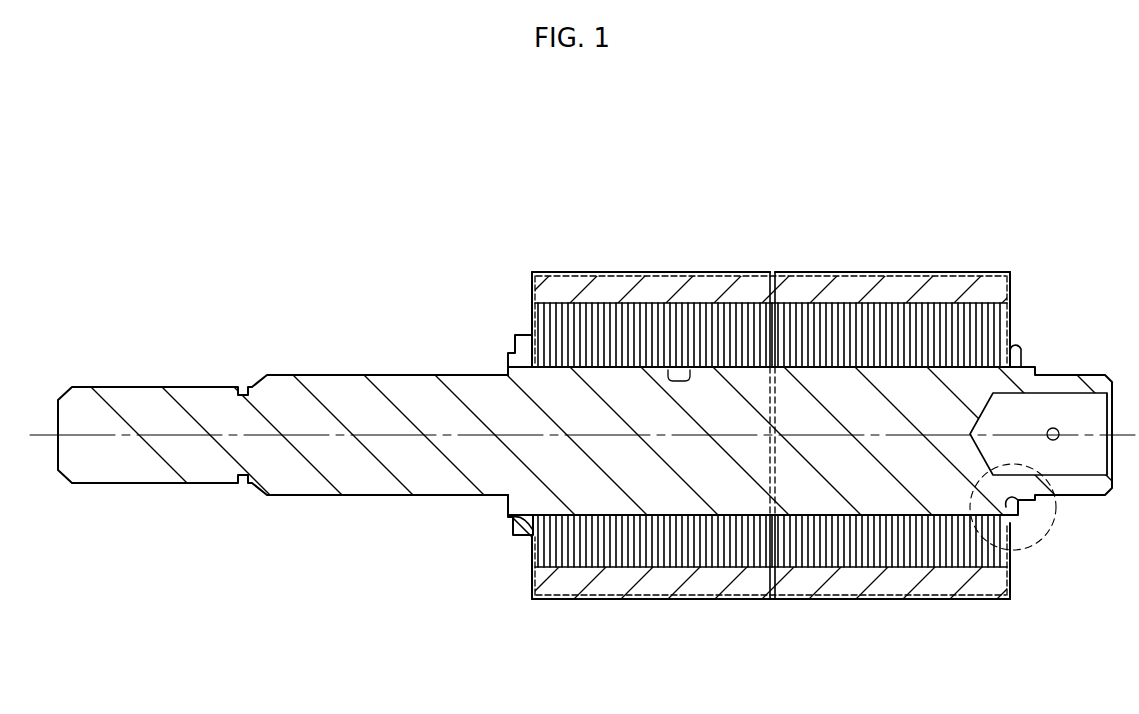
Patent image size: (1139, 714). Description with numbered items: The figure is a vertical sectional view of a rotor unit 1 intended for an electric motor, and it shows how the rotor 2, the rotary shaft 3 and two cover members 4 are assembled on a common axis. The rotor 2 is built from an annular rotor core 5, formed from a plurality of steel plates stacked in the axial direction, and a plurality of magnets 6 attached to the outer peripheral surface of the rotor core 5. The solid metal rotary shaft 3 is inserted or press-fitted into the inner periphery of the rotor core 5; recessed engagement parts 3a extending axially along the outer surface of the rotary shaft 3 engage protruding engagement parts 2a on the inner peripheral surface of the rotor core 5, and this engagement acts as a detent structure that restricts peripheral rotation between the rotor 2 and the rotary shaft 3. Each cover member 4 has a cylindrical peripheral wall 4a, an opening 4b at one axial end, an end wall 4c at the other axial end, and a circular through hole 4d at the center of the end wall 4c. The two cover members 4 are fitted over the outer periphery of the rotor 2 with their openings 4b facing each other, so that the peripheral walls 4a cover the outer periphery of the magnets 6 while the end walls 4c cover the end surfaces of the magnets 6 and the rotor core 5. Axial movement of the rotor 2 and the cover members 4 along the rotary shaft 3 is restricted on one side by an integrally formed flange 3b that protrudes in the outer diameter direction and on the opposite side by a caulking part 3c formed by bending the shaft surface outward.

The rotor unit 1 is at (1048, 239).
The rotor 2 is at (532, 313).
The protruding engagement parts 2a is at (668, 370).
The rotary shaft 3 is at (330, 375).
The recessed engagement parts 3a is at (622, 363).
The flange 3b is at (530, 537).
The caulking part 3c is at (1021, 551).
The cover member 4 is at (855, 273).
The peripheral wall 4a is at (946, 271).
The opening 4b is at (768, 330).
The end wall 4c is at (1013, 284).
The through hole 4d is at (1022, 358).
The rotor core 5 is at (985, 325).
The magnets 6 is at (805, 290).